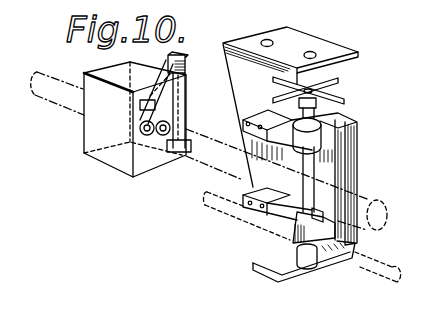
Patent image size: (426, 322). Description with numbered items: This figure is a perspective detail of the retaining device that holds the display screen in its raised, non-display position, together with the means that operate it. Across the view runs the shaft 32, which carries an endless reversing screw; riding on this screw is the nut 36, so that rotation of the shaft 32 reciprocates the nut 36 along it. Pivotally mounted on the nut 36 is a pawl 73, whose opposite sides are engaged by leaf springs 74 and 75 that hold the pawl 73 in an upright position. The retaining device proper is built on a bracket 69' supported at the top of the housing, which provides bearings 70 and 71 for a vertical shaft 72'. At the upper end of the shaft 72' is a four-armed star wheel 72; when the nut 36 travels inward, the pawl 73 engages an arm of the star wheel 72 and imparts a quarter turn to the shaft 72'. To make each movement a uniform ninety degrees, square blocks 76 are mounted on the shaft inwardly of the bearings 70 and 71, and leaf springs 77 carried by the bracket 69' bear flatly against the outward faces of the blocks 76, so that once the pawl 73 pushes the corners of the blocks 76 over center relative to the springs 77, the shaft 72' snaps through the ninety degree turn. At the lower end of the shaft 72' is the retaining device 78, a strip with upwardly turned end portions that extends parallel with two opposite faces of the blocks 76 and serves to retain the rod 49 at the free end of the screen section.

The shaft 32 is at (63, 112).
The nut 36 is at (103, 155).
The leaf spring 74 is at (188, 110).
The pawl 73 is at (186, 57).
The leaf spring 75 is at (158, 60).
The bracket 69' is at (315, 102).
The four-armed star wheel 72 is at (337, 81).
The bearing 70 is at (327, 128).
The vertical shaft 72' is at (285, 160).
The leaf spring 77 is at (272, 214).
The square block 76 is at (327, 212).
The bearing 71 is at (290, 234).
The retaining device 78 is at (304, 277).
The rod 49 is at (363, 265).